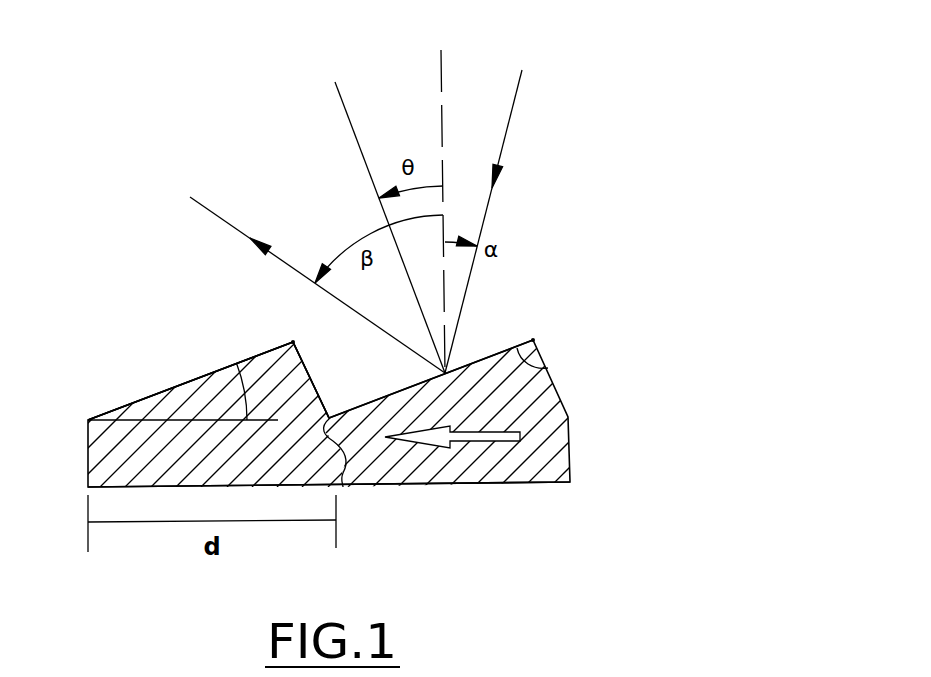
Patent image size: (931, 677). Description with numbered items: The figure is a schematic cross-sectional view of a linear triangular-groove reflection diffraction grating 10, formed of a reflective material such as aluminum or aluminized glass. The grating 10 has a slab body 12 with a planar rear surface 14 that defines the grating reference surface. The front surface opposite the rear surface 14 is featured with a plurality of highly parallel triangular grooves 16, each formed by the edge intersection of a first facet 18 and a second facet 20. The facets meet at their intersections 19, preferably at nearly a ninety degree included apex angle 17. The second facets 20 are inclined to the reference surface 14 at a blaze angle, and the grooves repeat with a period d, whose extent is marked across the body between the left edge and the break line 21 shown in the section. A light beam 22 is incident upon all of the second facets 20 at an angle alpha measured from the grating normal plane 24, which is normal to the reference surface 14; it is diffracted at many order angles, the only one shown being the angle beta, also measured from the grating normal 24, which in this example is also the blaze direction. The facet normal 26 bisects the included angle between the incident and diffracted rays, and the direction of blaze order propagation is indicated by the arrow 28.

The linear triangular-groove reflection diffraction grating 10 is at (602, 283).
The slab body 12 is at (97, 453).
The planar rear surface 14 is at (450, 482).
The triangular grooves 16 is at (330, 351).
The included apex angle 17 is at (549, 368).
The first facet 18 is at (312, 377).
The intersection 19 is at (293, 342).
The second facet 20 is at (165, 387).
The groove period break 21 is at (343, 487).
The light beam 22 is at (503, 142).
The grating normal plane 24 is at (442, 80).
The facet normal 26 is at (350, 120).
The arrow 28 is at (208, 200).